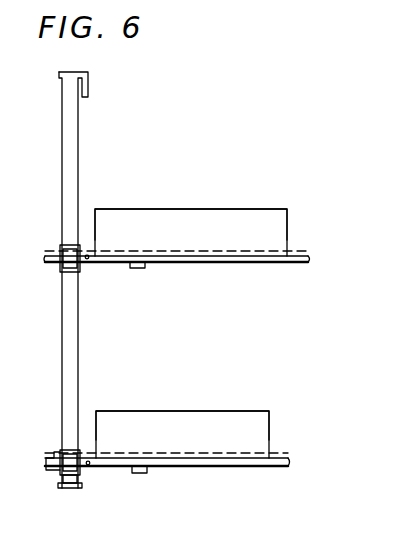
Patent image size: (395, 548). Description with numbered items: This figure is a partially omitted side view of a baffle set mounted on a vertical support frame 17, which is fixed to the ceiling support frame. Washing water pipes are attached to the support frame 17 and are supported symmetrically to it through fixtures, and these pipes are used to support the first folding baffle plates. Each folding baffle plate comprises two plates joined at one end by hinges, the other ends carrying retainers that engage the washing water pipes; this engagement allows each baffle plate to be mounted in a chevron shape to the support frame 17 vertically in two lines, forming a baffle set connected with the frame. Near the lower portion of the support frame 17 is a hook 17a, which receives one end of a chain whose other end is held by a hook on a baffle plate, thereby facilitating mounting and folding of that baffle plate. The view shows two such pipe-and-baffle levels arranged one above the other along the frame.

The support frame 17 is at (73, 133).
The hook 17a is at (57, 455).